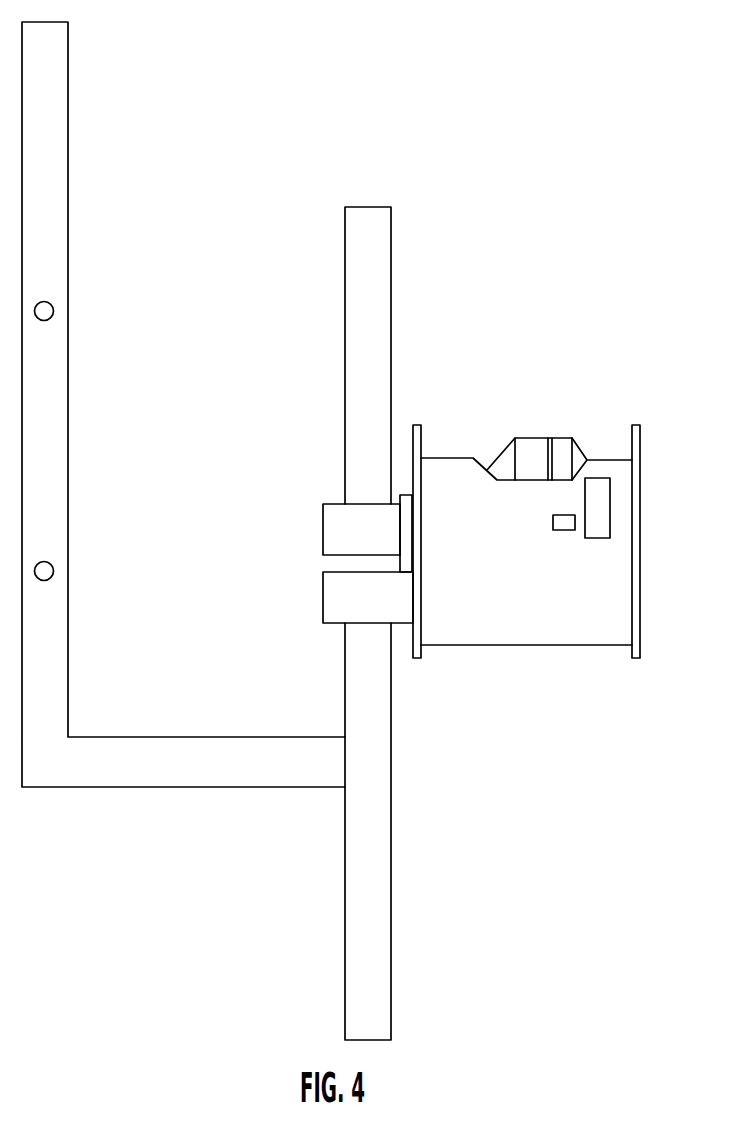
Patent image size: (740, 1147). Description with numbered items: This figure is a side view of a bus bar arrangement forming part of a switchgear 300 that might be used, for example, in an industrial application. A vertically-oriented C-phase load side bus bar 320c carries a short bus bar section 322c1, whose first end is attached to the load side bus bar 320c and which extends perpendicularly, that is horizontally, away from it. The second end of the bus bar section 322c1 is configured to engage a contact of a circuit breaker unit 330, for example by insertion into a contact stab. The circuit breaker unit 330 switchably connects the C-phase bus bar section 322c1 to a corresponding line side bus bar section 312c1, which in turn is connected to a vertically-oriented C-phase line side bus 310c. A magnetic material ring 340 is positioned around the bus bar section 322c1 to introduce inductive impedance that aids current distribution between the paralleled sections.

The switchgear 300 is at (556, 150).
The C-phase line side bus 310c is at (391, 830).
The C-phase load side bus bar 320c is at (392, 287).
The bus bar section 322c1 is at (398, 522).
The line side bus bar section 312c1 is at (402, 593).
The circuit breaker unit 330 is at (579, 507).
The magnetic material ring 340 is at (405, 509).